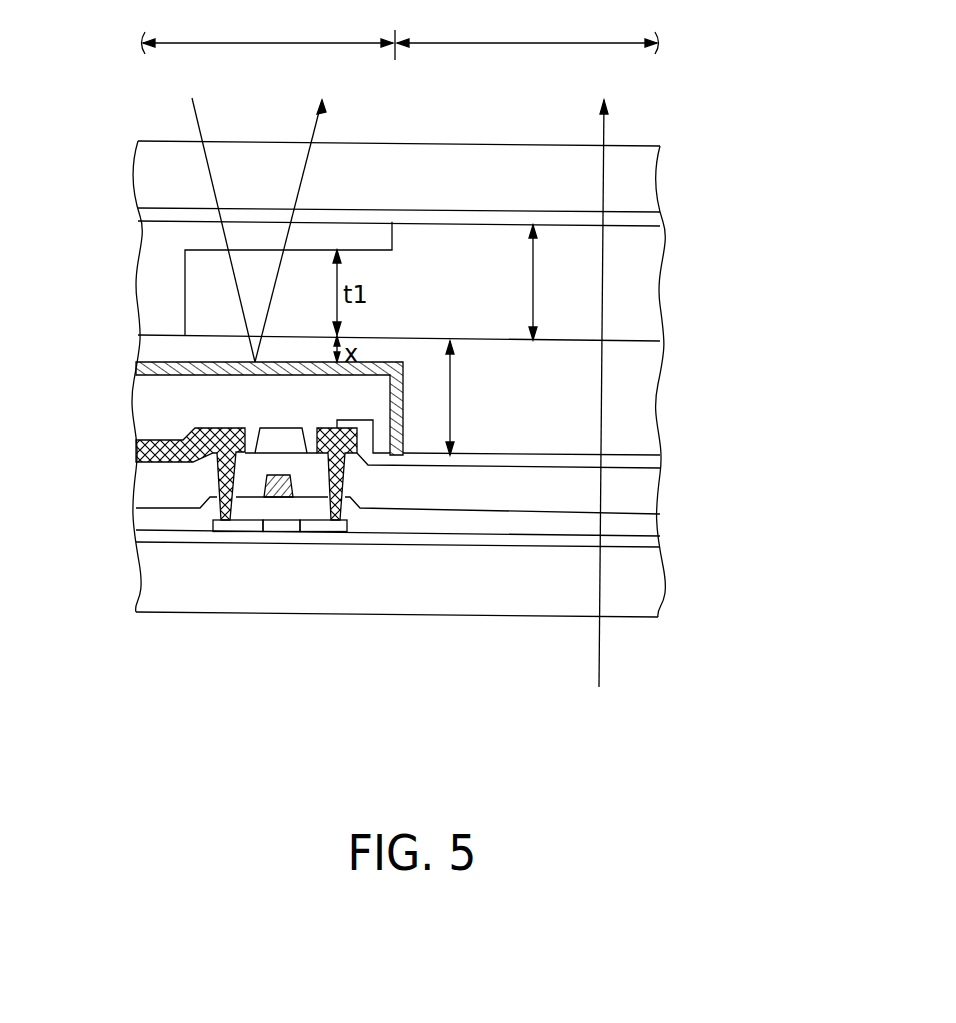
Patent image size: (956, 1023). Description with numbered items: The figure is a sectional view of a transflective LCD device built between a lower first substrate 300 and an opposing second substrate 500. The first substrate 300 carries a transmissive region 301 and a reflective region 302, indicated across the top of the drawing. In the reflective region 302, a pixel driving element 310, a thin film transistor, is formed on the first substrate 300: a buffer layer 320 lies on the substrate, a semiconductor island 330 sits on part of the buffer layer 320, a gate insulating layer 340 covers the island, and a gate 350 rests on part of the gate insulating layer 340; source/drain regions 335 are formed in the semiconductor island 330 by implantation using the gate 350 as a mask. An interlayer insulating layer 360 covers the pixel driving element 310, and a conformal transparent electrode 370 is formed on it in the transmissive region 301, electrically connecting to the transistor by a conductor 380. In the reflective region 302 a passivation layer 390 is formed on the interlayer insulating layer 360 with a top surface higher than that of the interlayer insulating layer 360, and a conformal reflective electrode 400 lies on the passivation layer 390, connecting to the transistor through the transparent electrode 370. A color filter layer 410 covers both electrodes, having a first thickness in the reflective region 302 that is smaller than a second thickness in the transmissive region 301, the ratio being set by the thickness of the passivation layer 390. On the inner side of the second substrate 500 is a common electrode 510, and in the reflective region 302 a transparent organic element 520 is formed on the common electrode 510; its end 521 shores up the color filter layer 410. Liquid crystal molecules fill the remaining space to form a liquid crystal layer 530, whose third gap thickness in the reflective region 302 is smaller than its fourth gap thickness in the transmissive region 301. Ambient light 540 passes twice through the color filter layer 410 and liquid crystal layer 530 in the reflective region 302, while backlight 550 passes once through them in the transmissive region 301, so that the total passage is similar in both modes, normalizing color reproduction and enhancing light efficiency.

The first substrate 300 is at (628, 587).
The transmissive region 301 is at (528, 32).
The reflective region 302 is at (269, 35).
The pixel driving element 310 is at (280, 536).
The buffer layer 320 is at (628, 548).
The semiconductor island 330 is at (211, 597).
The source/drain regions 335 is at (235, 527).
The gate insulating layer 340 is at (628, 522).
The gate 350 is at (283, 498).
The interlayer insulating layer 360 is at (628, 492).
The transparent electrode 370 is at (628, 462).
The conductor 380 is at (346, 482).
The passivation layer 390 is at (167, 410).
The reflective electrode 400 is at (167, 369).
The color filter layer 410 is at (630, 388).
The second substrate 500 is at (630, 185).
The common electrode 510 is at (630, 221).
The transparent organic element 520 is at (167, 249).
The end of the transparent organic element 521 is at (161, 320).
The liquid crystal layer 530 is at (630, 292).
The ambient light 540 is at (195, 117).
The backlight 550 is at (600, 655).